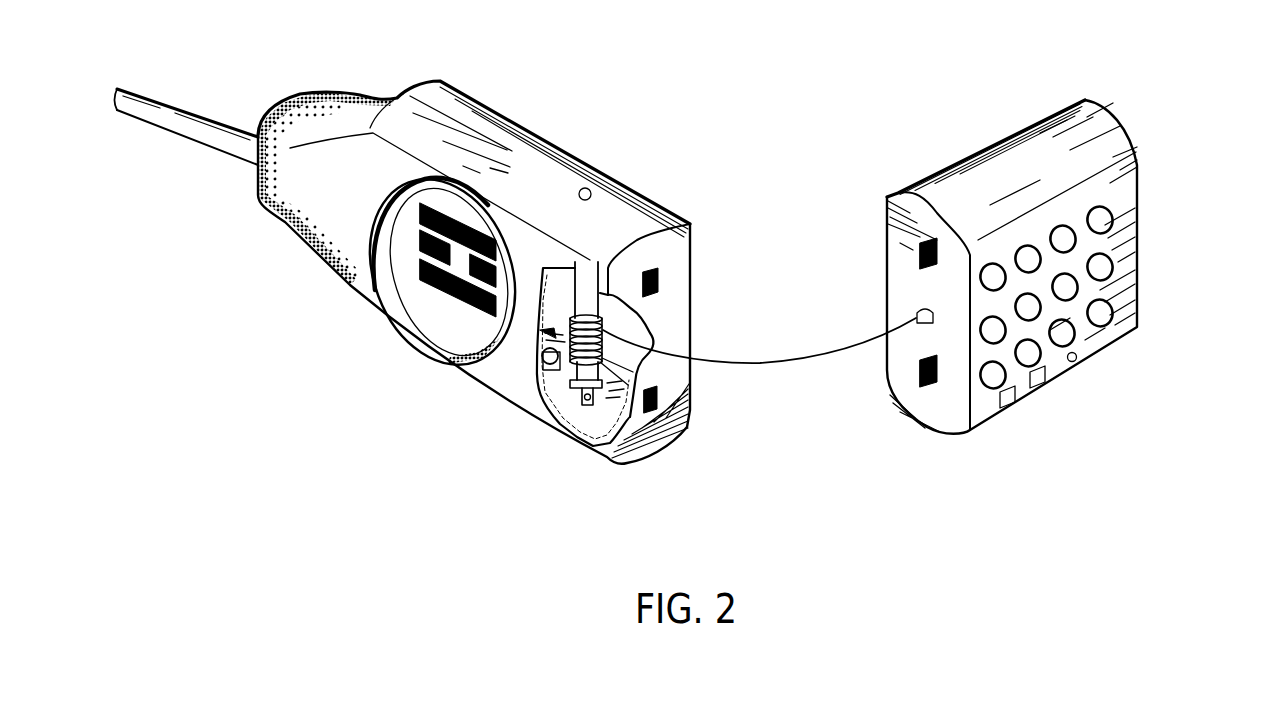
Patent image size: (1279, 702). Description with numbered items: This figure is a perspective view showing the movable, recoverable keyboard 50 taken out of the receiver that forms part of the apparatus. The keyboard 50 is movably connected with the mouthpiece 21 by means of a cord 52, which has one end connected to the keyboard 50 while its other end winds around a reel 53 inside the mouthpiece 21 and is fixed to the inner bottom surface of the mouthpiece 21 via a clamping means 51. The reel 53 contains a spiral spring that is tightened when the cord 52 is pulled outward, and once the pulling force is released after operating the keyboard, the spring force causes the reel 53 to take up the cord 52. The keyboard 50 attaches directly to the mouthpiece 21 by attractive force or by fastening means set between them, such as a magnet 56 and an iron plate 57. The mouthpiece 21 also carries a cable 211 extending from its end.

The mouthpiece 21 is at (458, 288).
The cable 211 is at (195, 122).
The recoverable keyboard 50 is at (1072, 286).
The clamping means 51 is at (547, 373).
The cord 52 is at (779, 358).
The reel 53 is at (583, 408).
The magnet 56 is at (918, 185).
The iron plate 57 is at (660, 277).